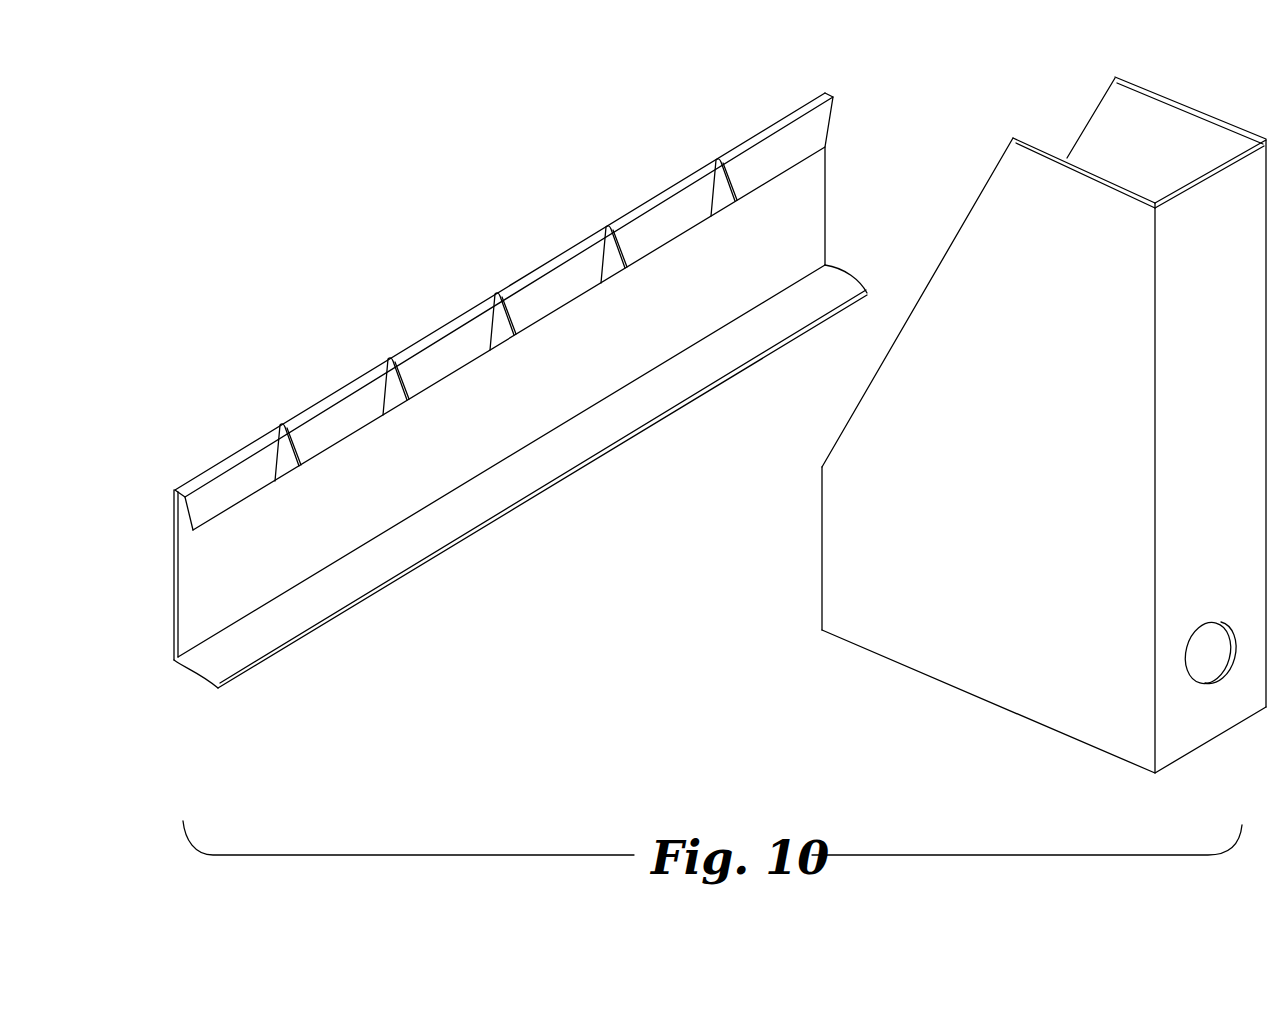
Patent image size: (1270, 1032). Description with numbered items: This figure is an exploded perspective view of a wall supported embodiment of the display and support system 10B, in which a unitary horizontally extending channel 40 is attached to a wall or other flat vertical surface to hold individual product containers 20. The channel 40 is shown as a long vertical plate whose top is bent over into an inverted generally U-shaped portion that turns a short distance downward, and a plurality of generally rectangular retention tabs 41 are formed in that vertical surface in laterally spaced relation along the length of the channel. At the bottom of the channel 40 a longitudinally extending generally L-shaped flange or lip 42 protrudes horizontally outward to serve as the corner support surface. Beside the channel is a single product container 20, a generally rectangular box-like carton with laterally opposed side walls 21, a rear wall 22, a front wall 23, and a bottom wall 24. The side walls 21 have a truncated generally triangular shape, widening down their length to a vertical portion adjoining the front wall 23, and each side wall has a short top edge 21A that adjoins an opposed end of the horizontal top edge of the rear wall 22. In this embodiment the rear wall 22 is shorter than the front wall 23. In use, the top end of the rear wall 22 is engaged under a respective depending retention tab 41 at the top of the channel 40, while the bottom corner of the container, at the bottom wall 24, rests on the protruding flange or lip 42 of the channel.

The display and support system 10B is at (968, 95).
The product container 20 is at (790, 568).
The side wall 21 is at (1160, 156).
The short top edge 21A is at (1182, 108).
The rear wall 22 is at (820, 510).
The front wall 23 is at (1216, 497).
The bottom wall 24 is at (1041, 726).
The channel 40 is at (808, 188).
The retention tab 41 is at (757, 183).
The flange or lip 42 is at (497, 500).